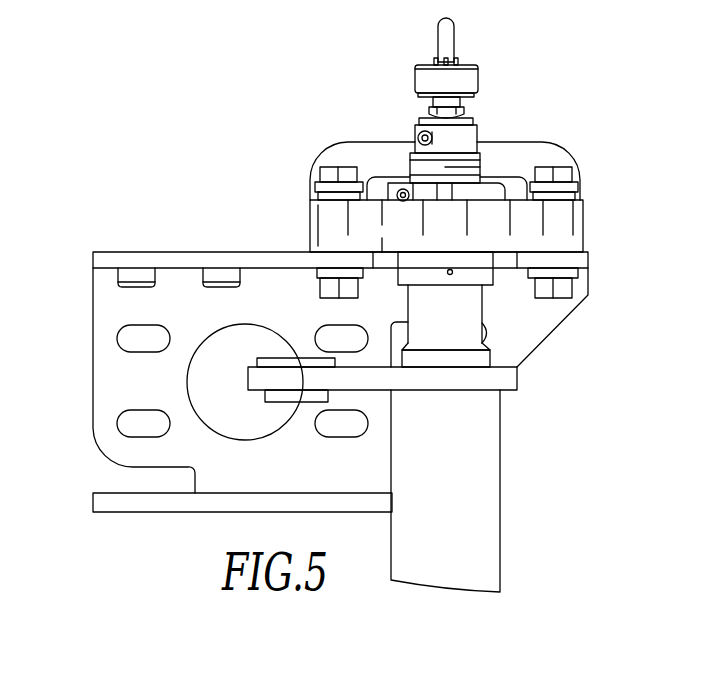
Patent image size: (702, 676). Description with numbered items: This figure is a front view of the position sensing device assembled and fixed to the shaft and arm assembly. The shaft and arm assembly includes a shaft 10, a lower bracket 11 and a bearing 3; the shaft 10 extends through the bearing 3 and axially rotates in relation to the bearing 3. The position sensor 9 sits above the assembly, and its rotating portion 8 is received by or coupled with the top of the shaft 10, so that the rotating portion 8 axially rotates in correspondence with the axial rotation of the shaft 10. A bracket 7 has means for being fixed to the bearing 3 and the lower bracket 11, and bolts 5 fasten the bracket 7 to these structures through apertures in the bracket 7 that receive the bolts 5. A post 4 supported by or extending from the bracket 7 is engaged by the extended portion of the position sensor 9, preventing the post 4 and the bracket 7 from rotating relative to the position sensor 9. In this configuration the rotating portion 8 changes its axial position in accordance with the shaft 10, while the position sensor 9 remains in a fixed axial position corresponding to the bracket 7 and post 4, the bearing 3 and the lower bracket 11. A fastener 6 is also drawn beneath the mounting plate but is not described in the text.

The bearing 3 is at (584, 215).
The post 4 is at (438, 36).
The bolts 5 is at (325, 178).
The mounting bolt 6 is at (572, 288).
The bracket 7 is at (350, 150).
The rotating portion 8 is at (473, 120).
The position sensor 9 is at (478, 76).
The shaft 10 is at (480, 453).
The lower bracket 11 is at (168, 251).